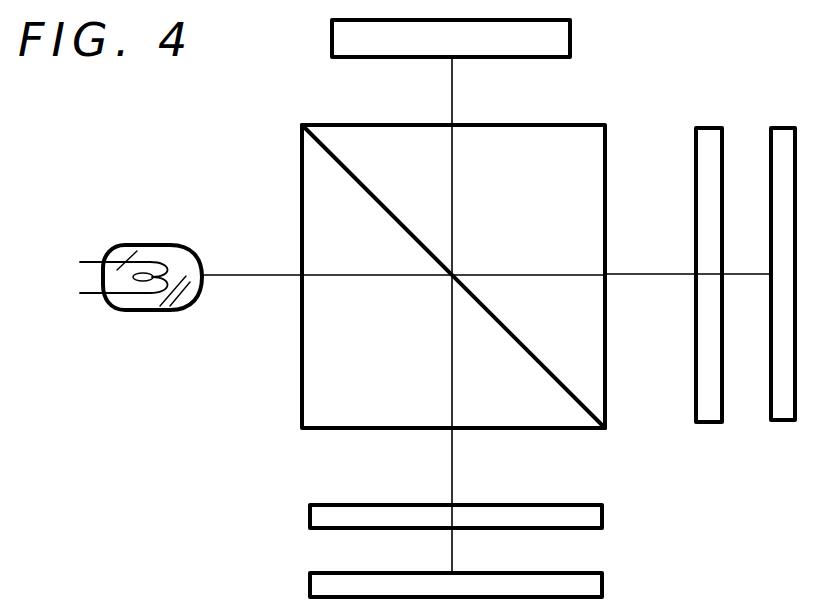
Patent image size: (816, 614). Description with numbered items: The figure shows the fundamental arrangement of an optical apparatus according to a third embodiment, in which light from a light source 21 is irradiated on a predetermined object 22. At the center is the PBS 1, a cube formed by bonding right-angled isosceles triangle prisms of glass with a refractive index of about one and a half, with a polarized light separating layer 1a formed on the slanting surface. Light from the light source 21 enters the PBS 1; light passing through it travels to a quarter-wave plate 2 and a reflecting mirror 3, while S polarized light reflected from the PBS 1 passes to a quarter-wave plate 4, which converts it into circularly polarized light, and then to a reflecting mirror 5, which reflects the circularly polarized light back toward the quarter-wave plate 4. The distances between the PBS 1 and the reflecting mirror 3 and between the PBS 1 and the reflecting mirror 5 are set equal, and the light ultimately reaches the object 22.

The PBS 1 is at (537, 123).
The polarized light separating layer 1a is at (358, 182).
The quarter-wave plate 2 is at (707, 128).
The reflecting mirror 3 is at (782, 128).
The quarter-wave plate 4 is at (602, 517).
The reflecting mirror 5 is at (602, 584).
The light source 21 is at (160, 244).
The object 22 is at (332, 35).